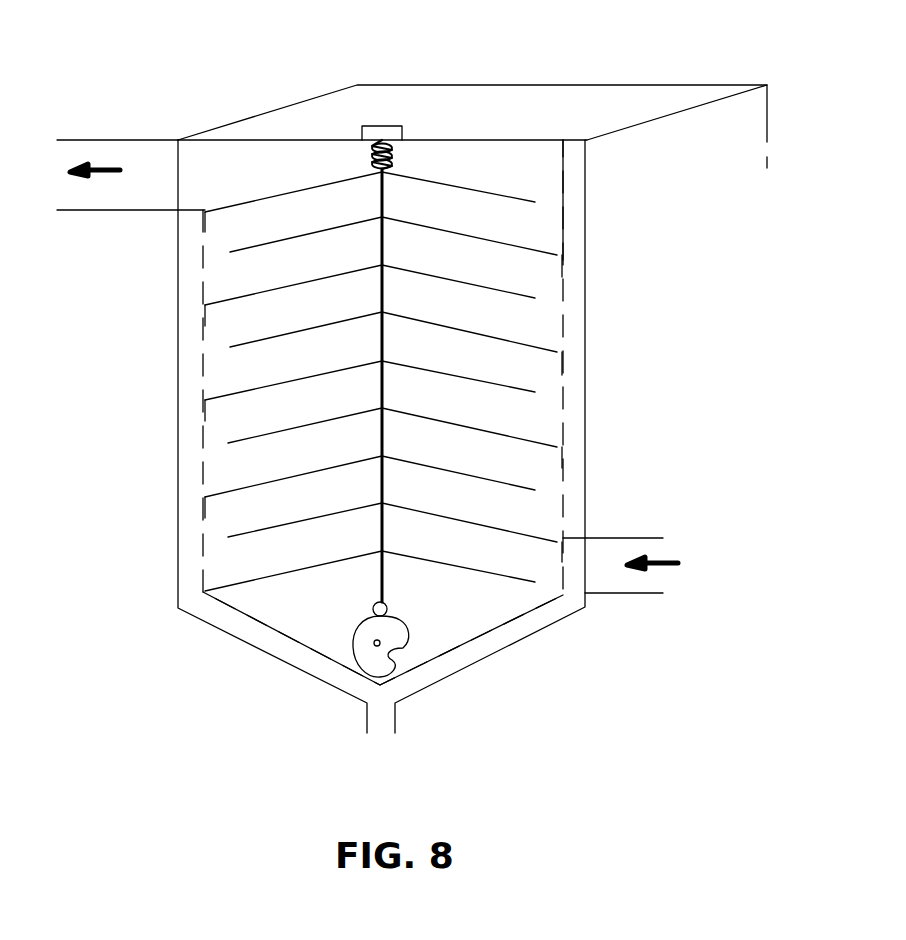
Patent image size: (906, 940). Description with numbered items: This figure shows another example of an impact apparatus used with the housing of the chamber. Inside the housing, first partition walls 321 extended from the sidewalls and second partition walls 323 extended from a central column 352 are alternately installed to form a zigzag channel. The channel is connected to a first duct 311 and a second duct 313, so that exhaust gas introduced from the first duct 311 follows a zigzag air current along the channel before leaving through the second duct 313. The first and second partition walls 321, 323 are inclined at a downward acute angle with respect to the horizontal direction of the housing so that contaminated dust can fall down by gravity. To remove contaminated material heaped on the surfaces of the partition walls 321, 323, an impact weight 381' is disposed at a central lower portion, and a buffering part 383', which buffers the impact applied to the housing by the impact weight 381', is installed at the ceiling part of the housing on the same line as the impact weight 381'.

The second duct 313 is at (127, 155).
The first duct 311 is at (627, 583).
The first partition walls 321 is at (527, 437).
The second partition walls 323 is at (290, 333).
The central column 352 is at (382, 195).
The buffering part 383' is at (314, 122).
The impact weight 381' is at (429, 659).